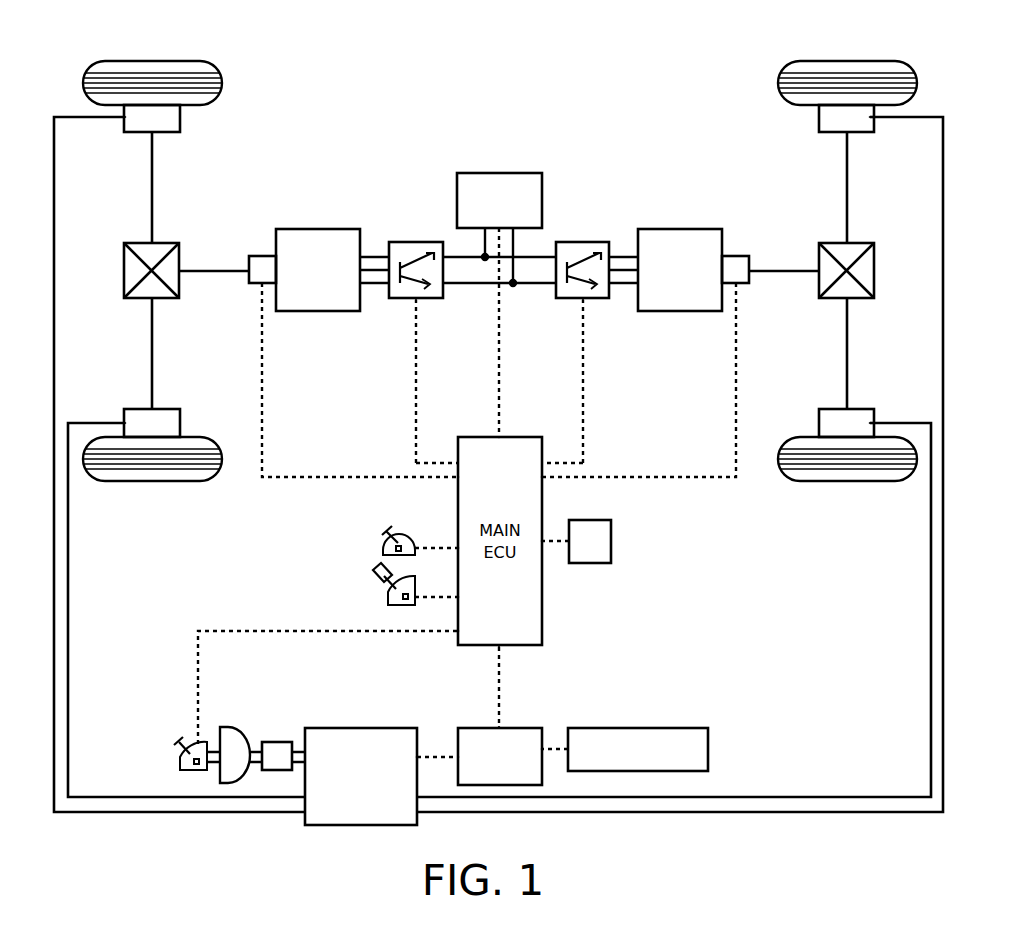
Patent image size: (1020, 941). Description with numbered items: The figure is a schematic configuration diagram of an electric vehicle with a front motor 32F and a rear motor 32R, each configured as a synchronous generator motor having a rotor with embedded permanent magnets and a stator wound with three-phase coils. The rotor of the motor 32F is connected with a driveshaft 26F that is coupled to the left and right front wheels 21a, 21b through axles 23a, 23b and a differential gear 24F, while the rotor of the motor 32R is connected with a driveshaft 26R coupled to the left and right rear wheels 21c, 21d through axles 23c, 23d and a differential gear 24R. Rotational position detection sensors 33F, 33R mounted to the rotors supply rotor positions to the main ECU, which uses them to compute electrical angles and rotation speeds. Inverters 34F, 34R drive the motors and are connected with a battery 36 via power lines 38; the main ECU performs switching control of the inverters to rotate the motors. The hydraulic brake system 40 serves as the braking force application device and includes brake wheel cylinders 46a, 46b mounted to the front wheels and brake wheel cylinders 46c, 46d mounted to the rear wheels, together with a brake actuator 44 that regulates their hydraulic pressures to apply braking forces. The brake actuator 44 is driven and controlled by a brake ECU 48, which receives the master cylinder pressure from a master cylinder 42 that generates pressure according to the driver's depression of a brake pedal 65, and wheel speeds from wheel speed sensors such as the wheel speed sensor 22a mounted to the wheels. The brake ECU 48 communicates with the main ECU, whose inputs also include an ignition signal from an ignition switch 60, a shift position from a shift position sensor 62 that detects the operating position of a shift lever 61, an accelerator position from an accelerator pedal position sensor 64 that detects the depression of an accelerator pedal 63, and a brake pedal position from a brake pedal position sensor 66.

The left front wheel 21a is at (847, 58).
The right front wheel 21b is at (849, 482).
The left rear wheel 21c is at (152, 58).
The right rear wheel 21d is at (150, 482).
The wheel speed sensor 22a is at (710, 750).
The axle 23a is at (845, 158).
The axle 23b is at (845, 365).
The axle 23c is at (154, 172).
The axle 23d is at (154, 351).
The differential gear 24R is at (130, 241).
The differential gear 24F is at (868, 241).
The driveshaft 26R is at (200, 268).
The driveshaft 26F is at (783, 268).
The motor 32R is at (310, 228).
The motor 32F is at (680, 228).
The rotational position detection sensor 33R is at (263, 255).
The rotational position detection sensor 33F is at (735, 255).
The inverter 34R is at (414, 240).
The inverter 34F is at (583, 240).
The battery 36 is at (500, 172).
The power lines 38 is at (525, 258).
The hydraulic brake system 40 is at (438, 712).
The master cylinder 42 is at (275, 740).
The brake actuator 44 is at (360, 727).
The brake wheel cylinder 46a is at (819, 116).
The brake wheel cylinder 46b is at (819, 423).
The brake wheel cylinder 46c is at (180, 118).
The brake wheel cylinder 46d is at (180, 423).
The brake electronic control unit 48 is at (520, 727).
The ignition switch 60 is at (611, 541).
The shift lever 61 is at (380, 537).
The shift position sensor 62 is at (383, 550).
The accelerator pedal 63 is at (373, 580).
The accelerator pedal position sensor 64 is at (388, 600).
The brake pedal 65 is at (178, 750).
The brake pedal position sensor 66 is at (182, 763).